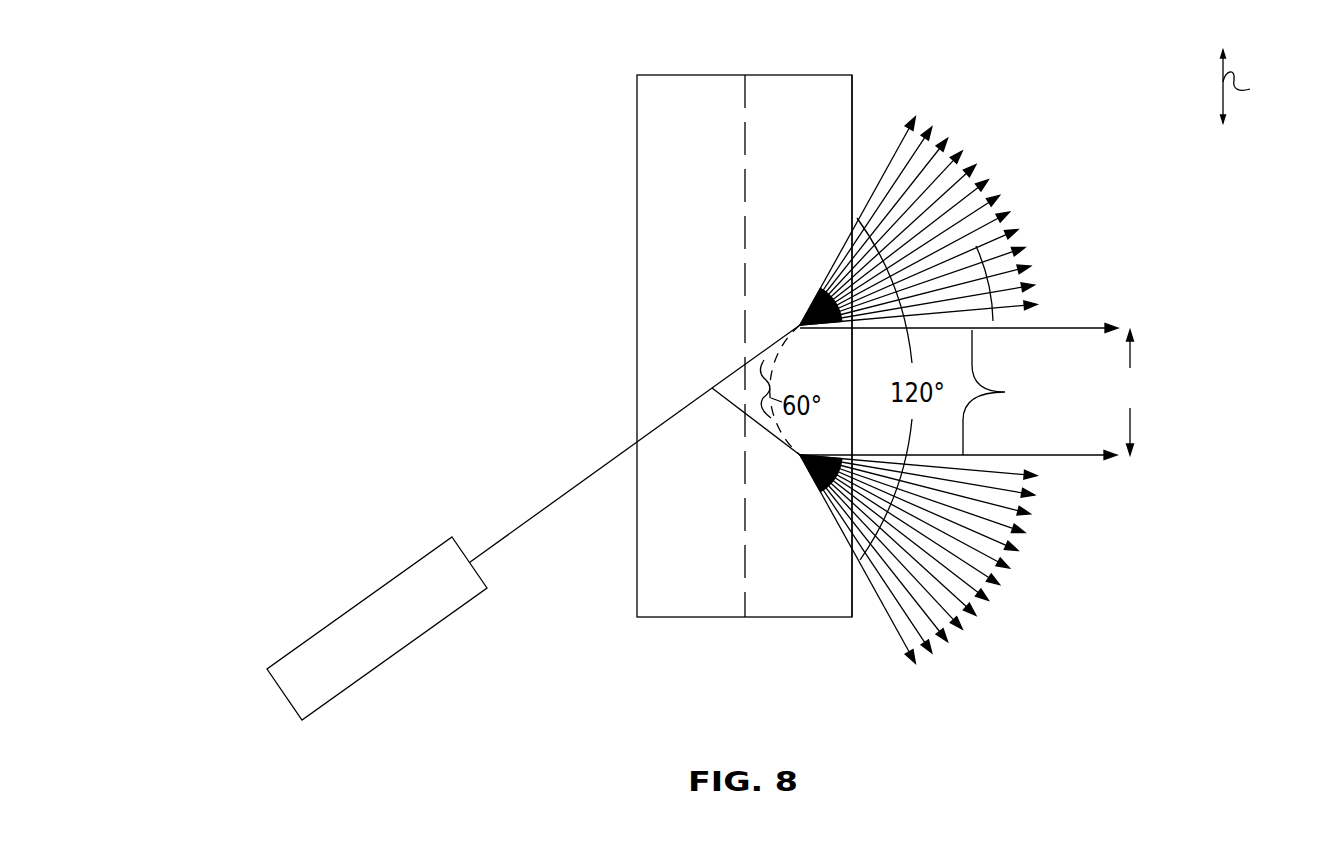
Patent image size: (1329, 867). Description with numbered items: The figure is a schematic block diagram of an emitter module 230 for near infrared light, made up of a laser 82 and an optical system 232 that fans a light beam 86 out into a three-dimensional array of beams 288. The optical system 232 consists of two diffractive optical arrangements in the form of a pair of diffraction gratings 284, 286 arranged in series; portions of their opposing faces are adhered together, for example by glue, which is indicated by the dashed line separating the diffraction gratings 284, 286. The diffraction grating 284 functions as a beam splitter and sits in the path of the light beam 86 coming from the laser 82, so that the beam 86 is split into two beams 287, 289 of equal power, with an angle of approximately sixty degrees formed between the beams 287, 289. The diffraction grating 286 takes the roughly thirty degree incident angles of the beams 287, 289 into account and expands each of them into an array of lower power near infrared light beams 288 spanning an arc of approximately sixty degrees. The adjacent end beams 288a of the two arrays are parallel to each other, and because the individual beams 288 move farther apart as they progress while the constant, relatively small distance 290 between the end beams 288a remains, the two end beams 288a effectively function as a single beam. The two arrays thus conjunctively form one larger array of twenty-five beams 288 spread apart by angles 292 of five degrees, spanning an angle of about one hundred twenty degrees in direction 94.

The emitter module 230 is at (395, 157).
The optical system 232 is at (625, 642).
The diffraction grating 284 is at (718, 115).
The diffraction grating 286 is at (825, 115).
The laser 82 is at (387, 598).
The light beam 86 is at (487, 550).
The beam 287 is at (730, 370).
The beam 289 is at (730, 407).
The near infrared light beams 288 is at (890, 157).
The end beams 288a is at (959, 392).
The distance 290 is at (1142, 392).
The angles 292 is at (1000, 272).
The direction 94 is at (1253, 86).